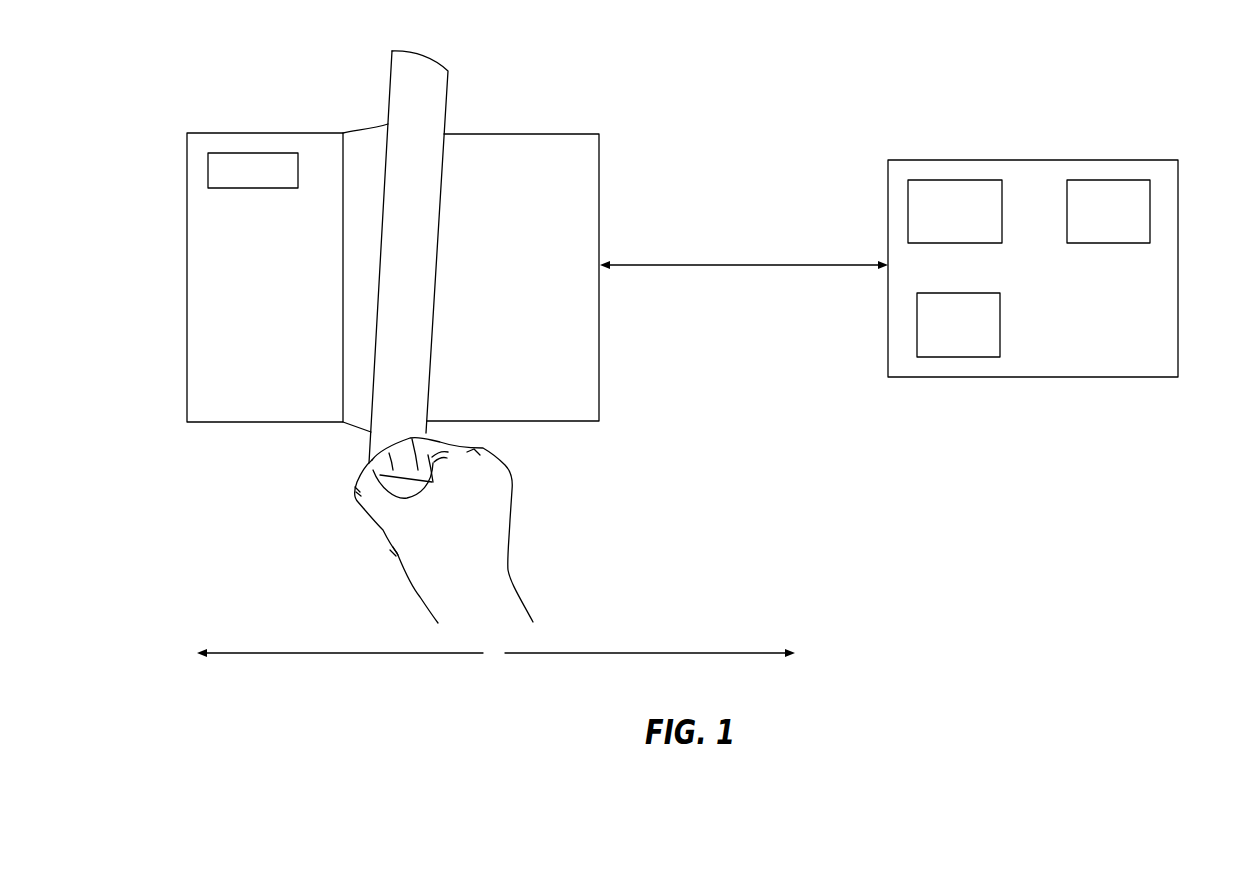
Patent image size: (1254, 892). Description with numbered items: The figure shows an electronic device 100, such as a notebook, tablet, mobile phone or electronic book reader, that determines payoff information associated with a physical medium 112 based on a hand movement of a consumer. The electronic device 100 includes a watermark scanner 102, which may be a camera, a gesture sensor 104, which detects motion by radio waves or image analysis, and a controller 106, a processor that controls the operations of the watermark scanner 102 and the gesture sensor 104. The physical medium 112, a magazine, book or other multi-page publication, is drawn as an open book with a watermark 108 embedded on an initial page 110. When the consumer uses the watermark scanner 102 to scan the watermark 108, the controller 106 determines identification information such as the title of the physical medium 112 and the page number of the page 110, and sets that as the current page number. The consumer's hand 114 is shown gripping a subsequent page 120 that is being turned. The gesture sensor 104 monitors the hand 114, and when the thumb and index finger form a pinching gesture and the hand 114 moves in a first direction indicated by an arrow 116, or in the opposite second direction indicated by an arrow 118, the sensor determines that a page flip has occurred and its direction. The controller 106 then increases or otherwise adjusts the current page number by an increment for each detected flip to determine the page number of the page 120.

The electronic device 100 is at (1037, 160).
The watermark scanner 102 is at (908, 207).
The gesture sensor 104 is at (1150, 210).
The controller 106 is at (1000, 323).
The watermark 108 is at (218, 188).
The page 110 is at (207, 423).
The physical medium 112 is at (248, 47).
The hand 114 is at (539, 526).
The arrow 116 is at (250, 653).
The arrow 118 is at (740, 653).
The page 120 is at (420, 53).